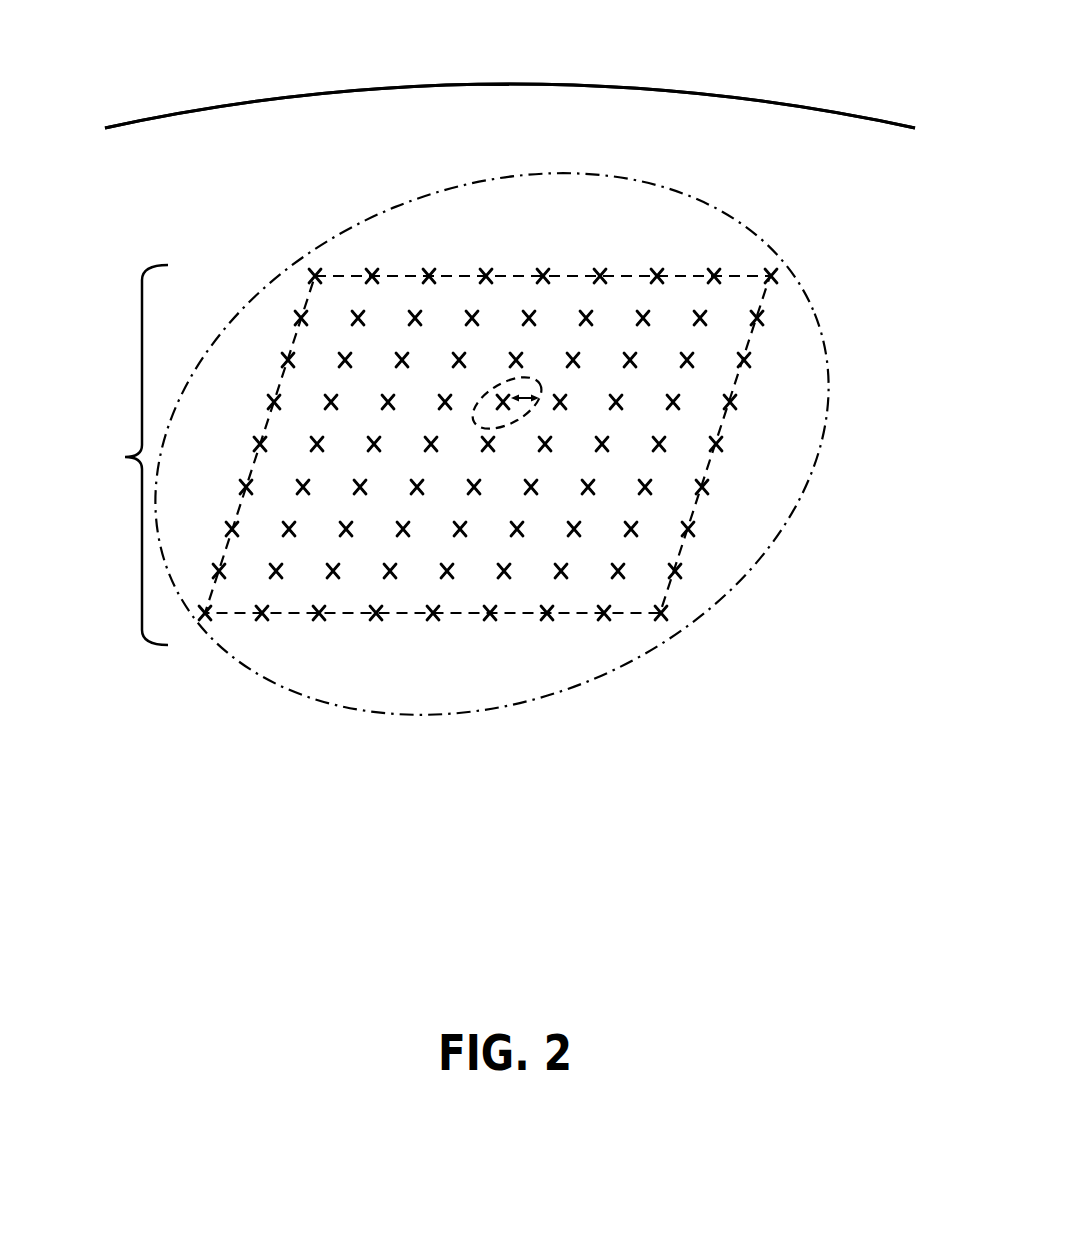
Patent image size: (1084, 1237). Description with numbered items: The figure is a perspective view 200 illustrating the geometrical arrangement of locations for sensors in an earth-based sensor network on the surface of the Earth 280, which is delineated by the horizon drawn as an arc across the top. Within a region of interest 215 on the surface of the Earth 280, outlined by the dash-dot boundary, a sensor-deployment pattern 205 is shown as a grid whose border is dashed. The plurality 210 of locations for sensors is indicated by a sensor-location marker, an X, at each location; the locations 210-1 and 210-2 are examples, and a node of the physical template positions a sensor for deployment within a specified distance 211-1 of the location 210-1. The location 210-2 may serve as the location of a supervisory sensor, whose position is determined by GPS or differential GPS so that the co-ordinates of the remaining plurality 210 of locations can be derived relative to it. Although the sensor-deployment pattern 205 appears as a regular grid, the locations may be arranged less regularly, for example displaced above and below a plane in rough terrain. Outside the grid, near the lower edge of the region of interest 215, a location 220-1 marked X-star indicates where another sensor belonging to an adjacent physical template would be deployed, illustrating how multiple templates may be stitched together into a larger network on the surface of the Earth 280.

The perspective view 200 is at (209, 64).
The surface of the Earth 280 is at (709, 90).
The region of interest 215 is at (254, 286).
The sensor-deployment pattern 205 is at (353, 269).
The plurality of locations for sensors 210 is at (426, 455).
The location 210-1 is at (499, 380).
The location 210-2 is at (577, 392).
The specified distance 211-1 is at (537, 381).
The location 220-1 is at (384, 740).